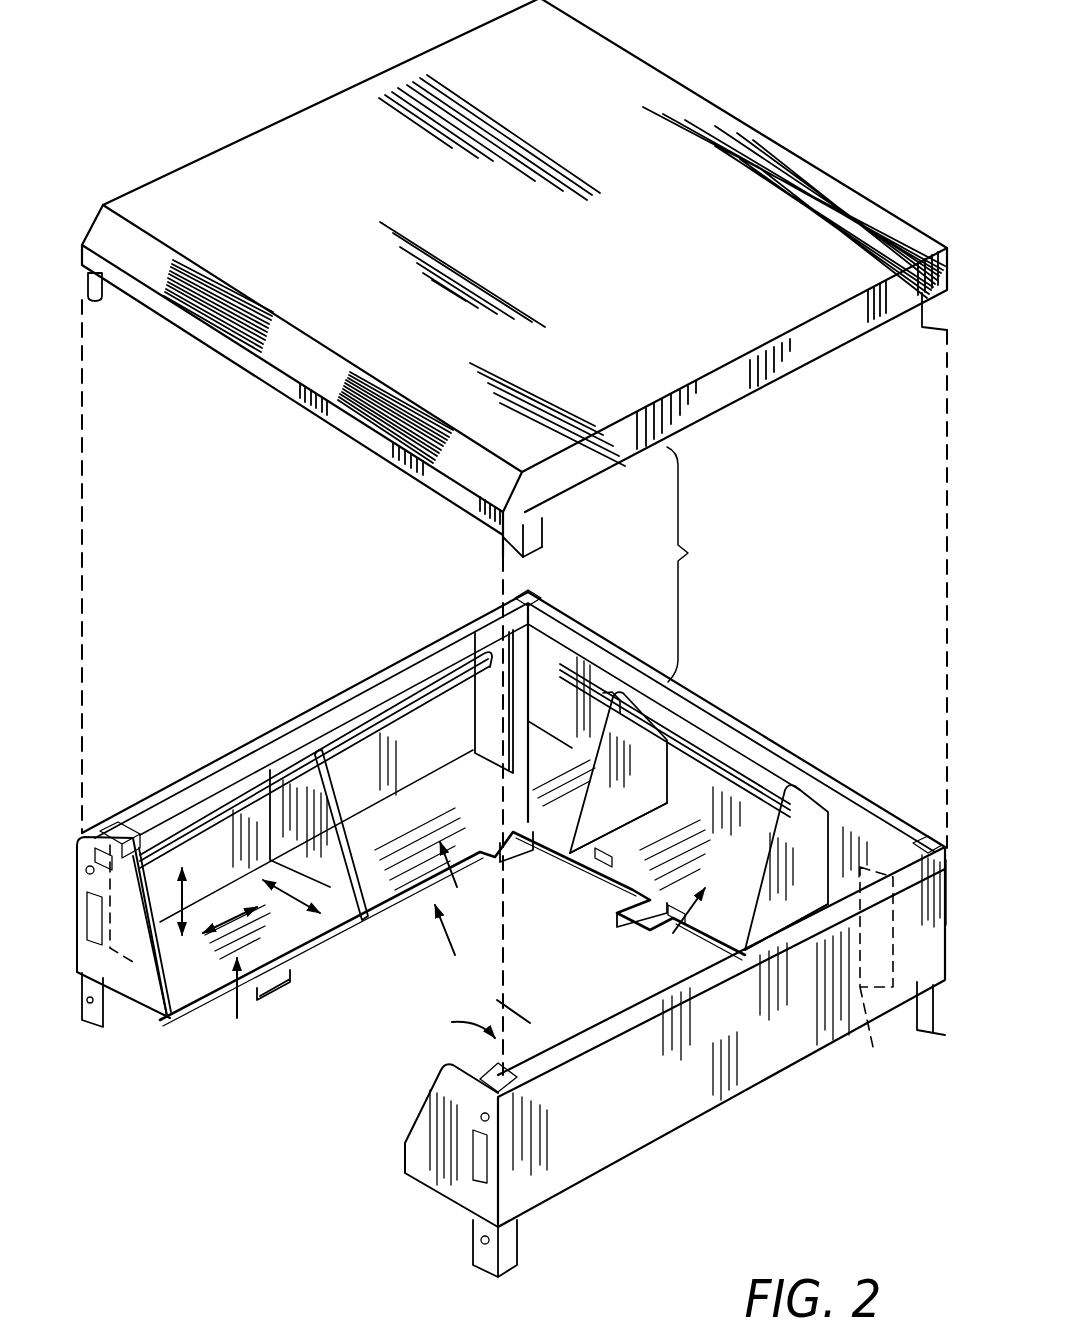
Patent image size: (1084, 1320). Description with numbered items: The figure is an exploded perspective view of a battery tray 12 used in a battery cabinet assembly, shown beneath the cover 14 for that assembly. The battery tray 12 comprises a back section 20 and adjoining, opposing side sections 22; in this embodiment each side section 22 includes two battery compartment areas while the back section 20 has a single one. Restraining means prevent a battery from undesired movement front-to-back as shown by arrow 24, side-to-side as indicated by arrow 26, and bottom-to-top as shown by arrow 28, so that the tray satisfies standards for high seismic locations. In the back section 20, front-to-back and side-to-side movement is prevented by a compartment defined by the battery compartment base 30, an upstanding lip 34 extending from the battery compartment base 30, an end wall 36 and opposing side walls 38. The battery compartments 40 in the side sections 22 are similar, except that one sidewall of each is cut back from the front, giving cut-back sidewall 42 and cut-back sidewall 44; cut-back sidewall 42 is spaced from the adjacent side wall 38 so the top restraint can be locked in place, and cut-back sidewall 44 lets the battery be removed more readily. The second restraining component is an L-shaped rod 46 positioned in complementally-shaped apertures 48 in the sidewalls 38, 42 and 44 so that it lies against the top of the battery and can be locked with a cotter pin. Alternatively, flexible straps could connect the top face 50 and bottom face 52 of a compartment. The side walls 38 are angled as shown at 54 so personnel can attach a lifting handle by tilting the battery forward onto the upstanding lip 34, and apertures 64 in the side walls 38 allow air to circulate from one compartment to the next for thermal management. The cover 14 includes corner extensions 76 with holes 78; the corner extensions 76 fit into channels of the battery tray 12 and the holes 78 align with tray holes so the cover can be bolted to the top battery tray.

The battery tray 12 is at (783, 735).
The cover 14 is at (753, 133).
The back section 20 is at (600, 880).
The side sections 22 is at (482, 964).
The arrow 24 is at (312, 918).
The arrow 26 is at (233, 955).
The arrow 28 is at (190, 835).
The battery compartment base 30 is at (593, 863).
The upstanding lip 34 is at (508, 862).
The end wall 36 is at (575, 720).
The side walls 38 is at (371, 740).
The battery compartments 40 is at (261, 832).
The cut-back sidewall 42 is at (150, 830).
The cut-back sidewall 44 is at (470, 655).
The L-shaped rod 46 is at (250, 795).
The apertures 48 is at (487, 655).
The top face 50 is at (548, 757).
The bottom face 52 is at (580, 700).
The angled portion 54 is at (133, 965).
The apertures 64 is at (96, 945).
The corner extensions 76 is at (548, 536).
The holes 78 is at (98, 302).